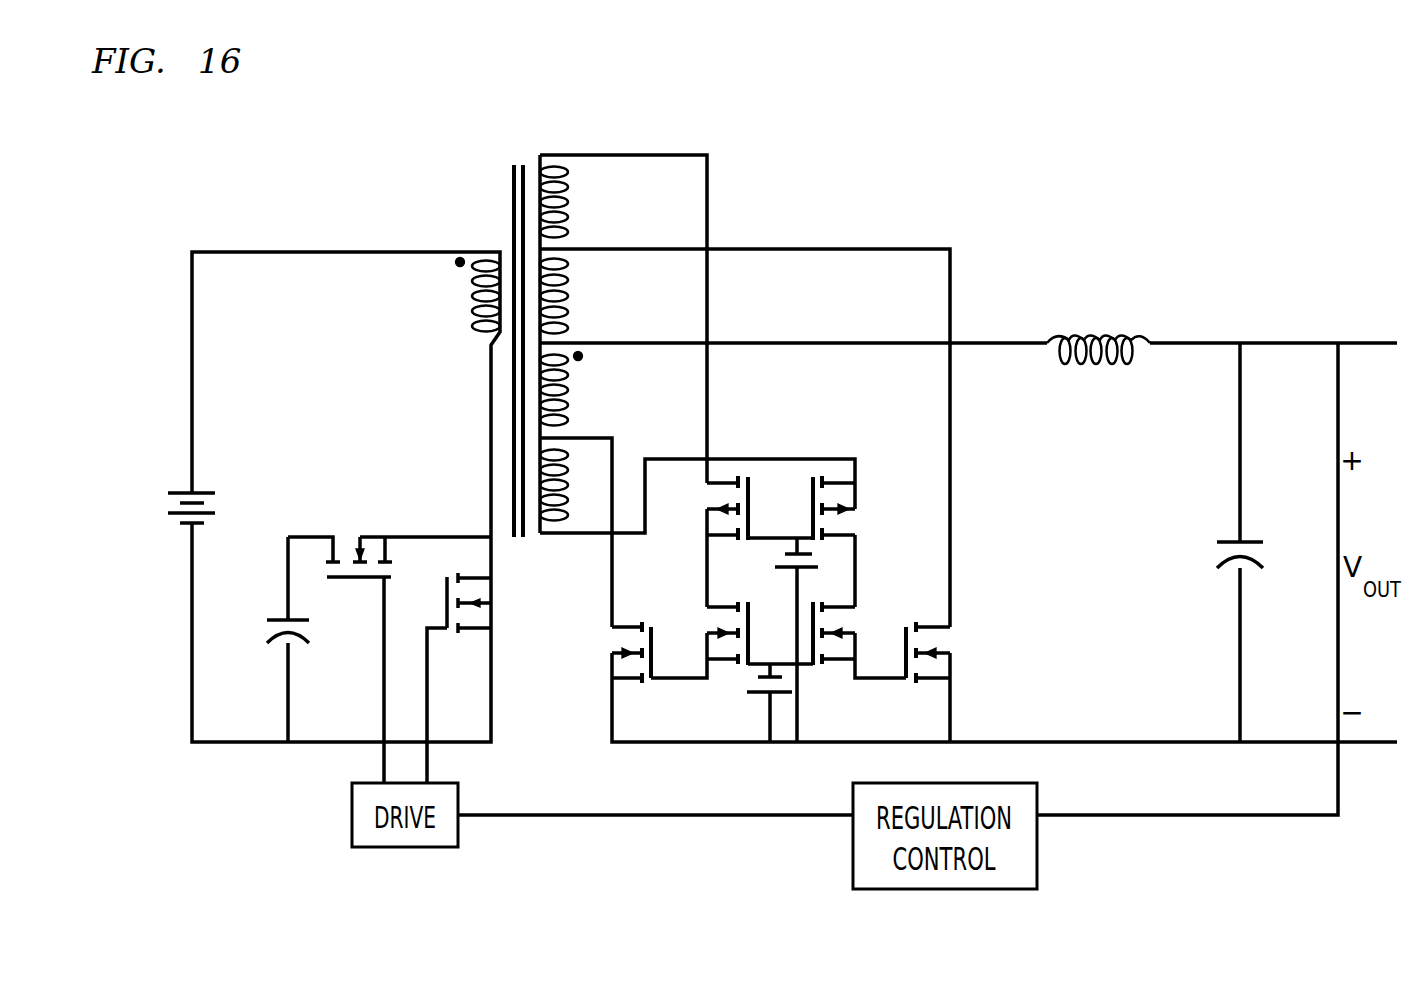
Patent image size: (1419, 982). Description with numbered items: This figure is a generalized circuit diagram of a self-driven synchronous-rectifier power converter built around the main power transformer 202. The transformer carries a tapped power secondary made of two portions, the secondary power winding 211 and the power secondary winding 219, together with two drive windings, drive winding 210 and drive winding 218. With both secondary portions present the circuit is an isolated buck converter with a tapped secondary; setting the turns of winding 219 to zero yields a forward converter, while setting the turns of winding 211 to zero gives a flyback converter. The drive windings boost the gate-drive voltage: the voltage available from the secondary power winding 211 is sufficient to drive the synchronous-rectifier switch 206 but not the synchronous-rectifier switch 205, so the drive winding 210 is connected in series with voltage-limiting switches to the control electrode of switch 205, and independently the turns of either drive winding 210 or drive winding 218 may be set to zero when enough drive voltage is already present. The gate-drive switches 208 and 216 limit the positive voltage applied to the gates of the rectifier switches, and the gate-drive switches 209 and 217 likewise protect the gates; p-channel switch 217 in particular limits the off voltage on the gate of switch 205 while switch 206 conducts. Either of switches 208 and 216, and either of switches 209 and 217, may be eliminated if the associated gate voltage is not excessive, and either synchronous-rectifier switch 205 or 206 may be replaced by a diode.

The main power transformer 202 is at (512, 168).
The drive winding 218 is at (567, 199).
The power secondary winding portion 219 is at (567, 294).
The secondary power winding 211 is at (567, 390).
The drive winding 210 is at (567, 463).
The gate-drive switch 216 is at (707, 535).
The gate-drive switch 217 is at (855, 509).
The gate-drive switch 208 is at (707, 607).
The gate-drive switch 209 is at (855, 607).
The synchronous-rectifier switch 206 is at (612, 655).
The synchronous-rectifier switch 205 is at (950, 655).